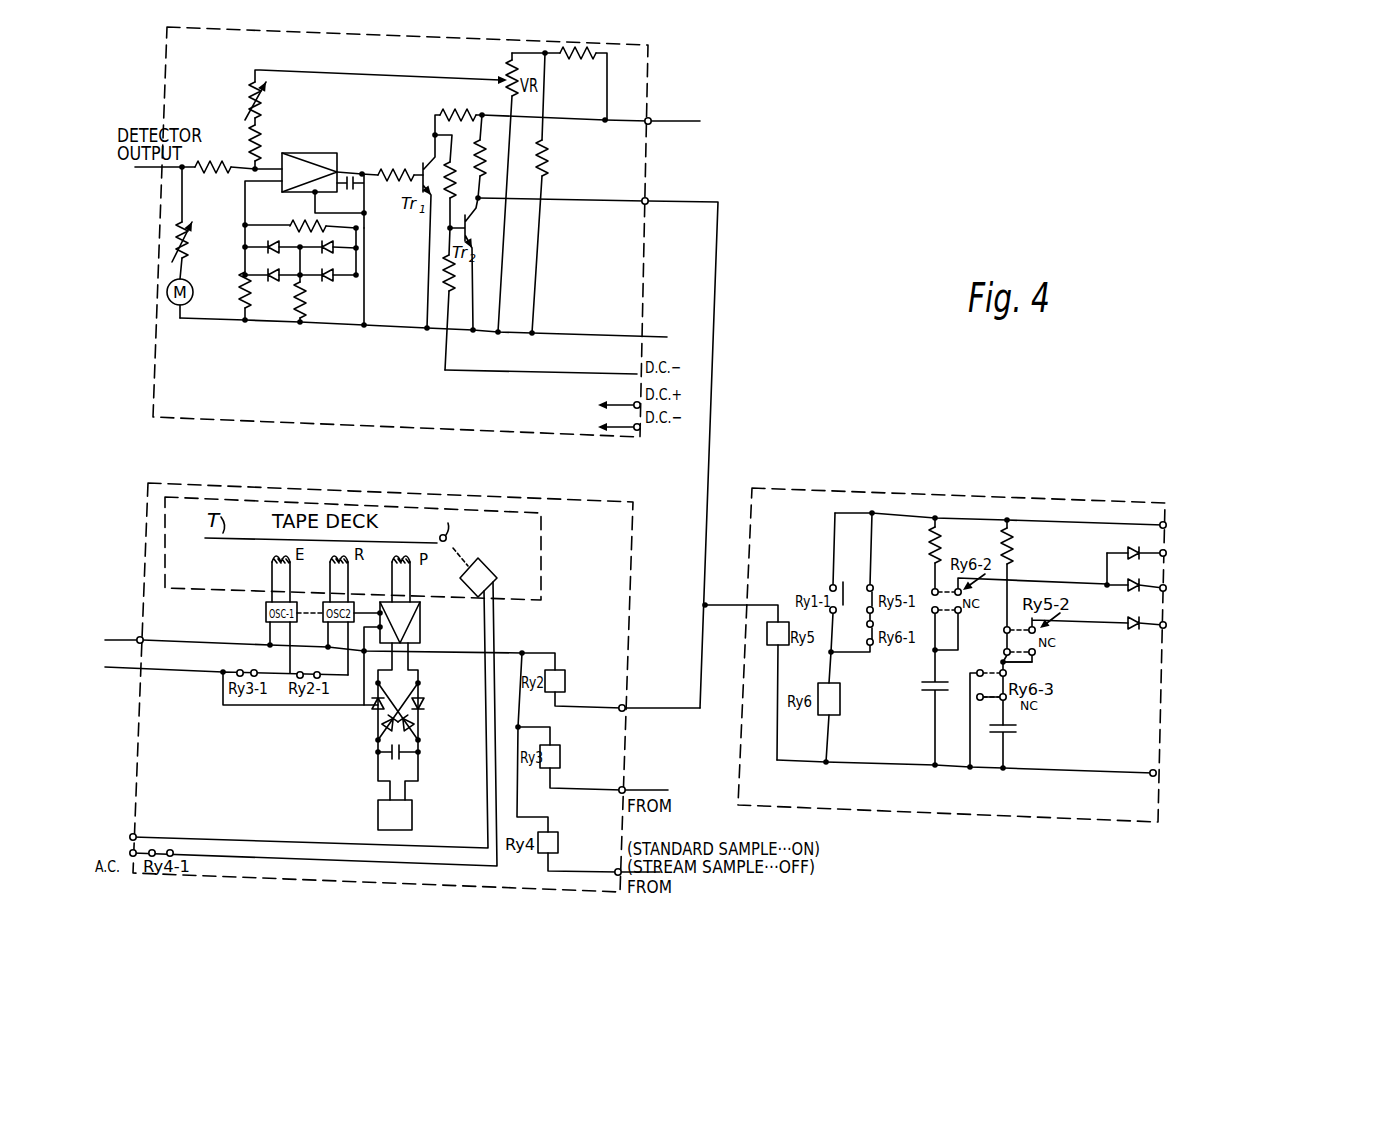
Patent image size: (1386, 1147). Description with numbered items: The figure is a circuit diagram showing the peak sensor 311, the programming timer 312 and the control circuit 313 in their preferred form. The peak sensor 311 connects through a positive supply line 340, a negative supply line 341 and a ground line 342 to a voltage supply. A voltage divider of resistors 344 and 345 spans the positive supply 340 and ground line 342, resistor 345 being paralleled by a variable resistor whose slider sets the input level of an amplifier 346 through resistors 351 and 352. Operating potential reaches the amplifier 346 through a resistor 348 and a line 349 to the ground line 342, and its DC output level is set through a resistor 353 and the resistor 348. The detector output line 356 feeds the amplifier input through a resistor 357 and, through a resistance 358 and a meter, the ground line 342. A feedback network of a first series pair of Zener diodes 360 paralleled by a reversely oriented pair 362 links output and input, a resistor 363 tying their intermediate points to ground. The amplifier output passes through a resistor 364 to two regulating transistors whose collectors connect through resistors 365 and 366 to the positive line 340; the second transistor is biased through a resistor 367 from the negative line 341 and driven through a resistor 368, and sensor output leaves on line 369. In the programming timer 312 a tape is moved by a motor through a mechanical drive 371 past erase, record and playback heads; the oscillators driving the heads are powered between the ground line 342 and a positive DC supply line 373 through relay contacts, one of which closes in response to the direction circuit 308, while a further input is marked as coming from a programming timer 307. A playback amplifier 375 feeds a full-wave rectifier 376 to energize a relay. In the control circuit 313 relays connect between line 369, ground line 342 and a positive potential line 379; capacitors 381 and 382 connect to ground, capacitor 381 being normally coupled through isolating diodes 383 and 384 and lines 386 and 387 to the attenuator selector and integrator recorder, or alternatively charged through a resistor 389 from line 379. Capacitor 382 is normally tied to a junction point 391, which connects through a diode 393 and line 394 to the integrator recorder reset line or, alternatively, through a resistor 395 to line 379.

The programming timer 307 is at (737, 908).
The direction circuit 308 is at (718, 828).
The peak sensor 311 is at (400, 243).
The programming timer 312 is at (383, 696).
The control circuit 313 is at (951, 668).
The positive DC supply line 340 is at (634, 126).
The negative DC supply line 341 is at (599, 372).
The ground line 342 is at (605, 330).
The resistor 344 is at (583, 58).
The resistor 345 is at (548, 152).
The amplifier 346 is at (336, 152).
The resistor 348 is at (240, 299).
The line 349 is at (368, 288).
The resistor 351 is at (255, 143).
The resistor 352 is at (258, 96).
The resistor 353 is at (304, 220).
The detector output line 356 is at (146, 170).
The resistor 357 is at (218, 182).
The resistance 358 is at (180, 247).
The first series pair of Zener diodes 360 is at (350, 243).
The second pair of reversely oriented Zener diodes 362 is at (326, 281).
The resistor 363 is at (297, 297).
The resistor 364 is at (411, 156).
The resistor 365 is at (479, 103).
The resistor 366 is at (491, 157).
The resistor 367 is at (459, 299).
The resistor 368 is at (457, 181).
The peak sensor output line 369 is at (718, 243).
The mechanical drive 371 is at (460, 549).
The positive DC supply line 373 is at (203, 675).
The playback amplifier 375 is at (421, 634).
The full-wave rectifier 376 is at (434, 719).
The positive potential line 379 is at (888, 513).
The capacitor 381 is at (926, 684).
The capacitor 382 is at (1008, 736).
The isolating diode 383 is at (1125, 552).
The isolating diode 384 is at (1107, 584).
The line 386 is at (1152, 556).
The line 387 is at (1149, 591).
The resistor 389 is at (930, 540).
The junction point 391 is at (1000, 661).
The diode 393 is at (1133, 628).
The line 394 is at (1151, 625).
The resistor 395 is at (1012, 545).